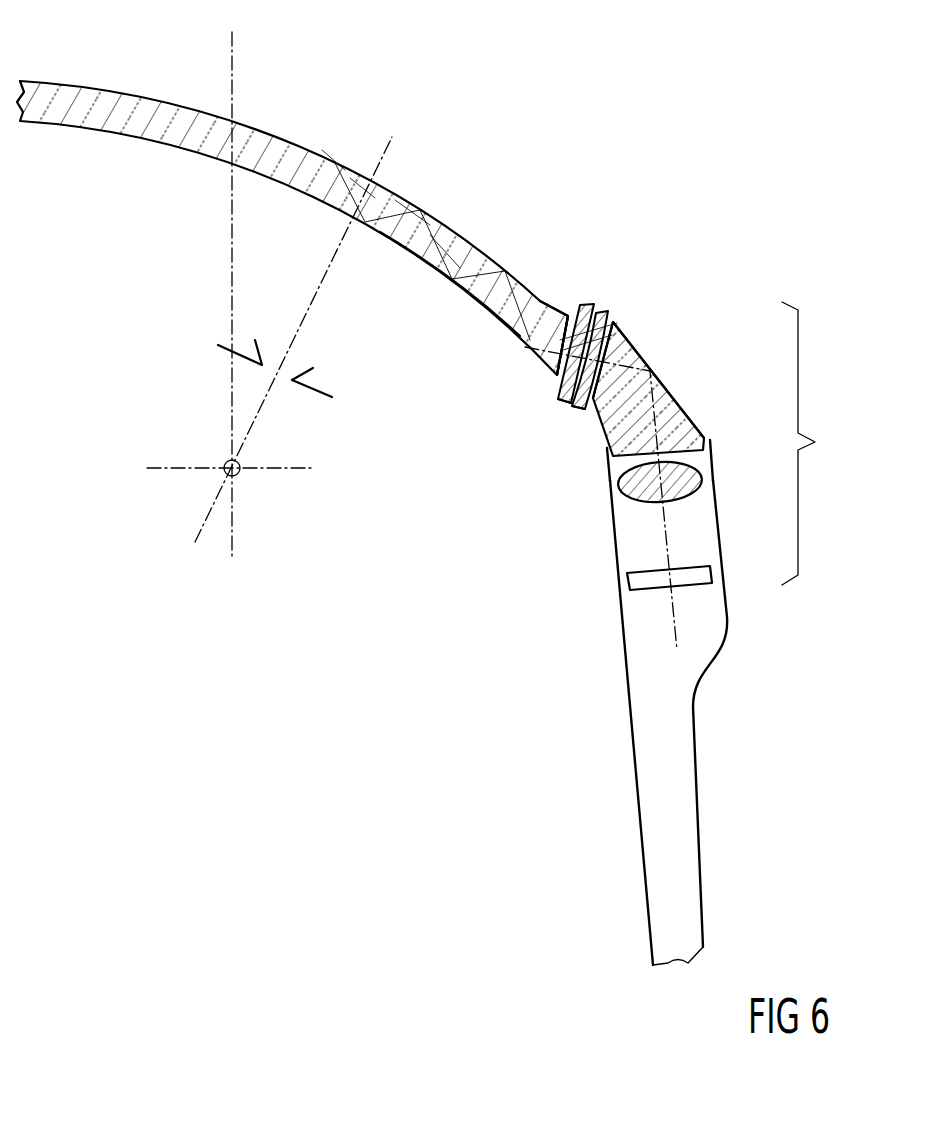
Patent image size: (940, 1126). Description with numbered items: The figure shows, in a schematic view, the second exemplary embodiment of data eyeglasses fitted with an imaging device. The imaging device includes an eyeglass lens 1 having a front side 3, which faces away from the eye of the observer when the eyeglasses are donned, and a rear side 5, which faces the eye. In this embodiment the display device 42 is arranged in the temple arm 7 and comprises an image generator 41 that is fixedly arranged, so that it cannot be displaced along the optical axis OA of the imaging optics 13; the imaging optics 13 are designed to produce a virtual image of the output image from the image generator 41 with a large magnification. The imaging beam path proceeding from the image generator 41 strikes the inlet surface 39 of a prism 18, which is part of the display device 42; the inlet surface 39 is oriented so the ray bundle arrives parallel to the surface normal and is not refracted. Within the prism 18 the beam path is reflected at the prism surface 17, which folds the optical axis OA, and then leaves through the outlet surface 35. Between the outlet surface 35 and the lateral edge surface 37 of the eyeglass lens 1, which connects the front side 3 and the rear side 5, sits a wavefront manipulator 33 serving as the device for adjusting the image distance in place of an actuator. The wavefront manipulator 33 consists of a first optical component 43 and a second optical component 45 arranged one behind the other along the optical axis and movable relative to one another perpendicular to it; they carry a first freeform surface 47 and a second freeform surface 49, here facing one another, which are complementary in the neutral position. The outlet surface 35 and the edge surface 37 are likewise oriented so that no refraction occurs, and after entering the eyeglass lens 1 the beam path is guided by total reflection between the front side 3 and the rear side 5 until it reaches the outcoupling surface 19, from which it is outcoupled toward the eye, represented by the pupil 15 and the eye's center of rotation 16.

The eyeglass lens 1 is at (106, 97).
The front side 3 is at (484, 253).
The rear side 5 is at (447, 280).
The temple arm 7 is at (625, 800).
The imaging optics 13 is at (620, 486).
The pupil 15 is at (332, 397).
The eye's center of rotation 16 is at (237, 473).
The prism surface 17 is at (660, 360).
The prism 18 is at (680, 405).
The outcoupling surface 19 is at (339, 146).
The wavefront manipulator 33 is at (605, 303).
The outlet surface 35 is at (606, 312).
The lateral edge surface 37 is at (580, 304).
The inlet surface 39 is at (680, 455).
The image generator 41 is at (627, 580).
The display device 42 is at (815, 443).
The first optical component 43 is at (578, 412).
The second optical component 45 is at (560, 402).
The first freeform surface 47 is at (564, 342).
The second freeform surface 49 is at (622, 333).
The optical axis OA is at (667, 538).